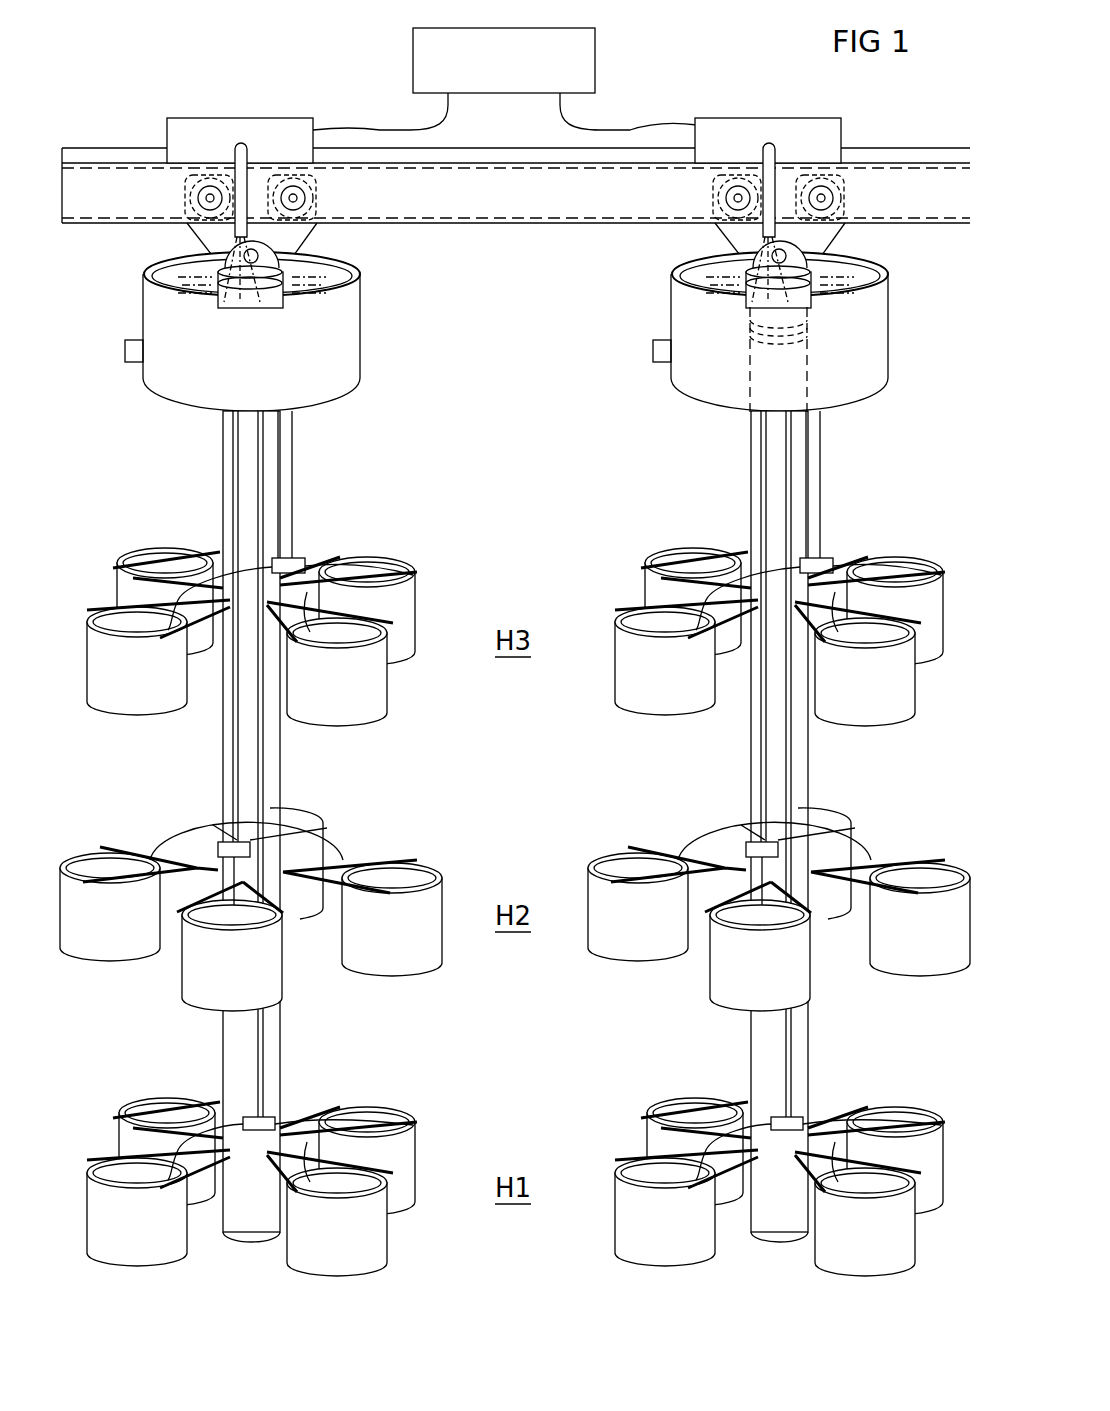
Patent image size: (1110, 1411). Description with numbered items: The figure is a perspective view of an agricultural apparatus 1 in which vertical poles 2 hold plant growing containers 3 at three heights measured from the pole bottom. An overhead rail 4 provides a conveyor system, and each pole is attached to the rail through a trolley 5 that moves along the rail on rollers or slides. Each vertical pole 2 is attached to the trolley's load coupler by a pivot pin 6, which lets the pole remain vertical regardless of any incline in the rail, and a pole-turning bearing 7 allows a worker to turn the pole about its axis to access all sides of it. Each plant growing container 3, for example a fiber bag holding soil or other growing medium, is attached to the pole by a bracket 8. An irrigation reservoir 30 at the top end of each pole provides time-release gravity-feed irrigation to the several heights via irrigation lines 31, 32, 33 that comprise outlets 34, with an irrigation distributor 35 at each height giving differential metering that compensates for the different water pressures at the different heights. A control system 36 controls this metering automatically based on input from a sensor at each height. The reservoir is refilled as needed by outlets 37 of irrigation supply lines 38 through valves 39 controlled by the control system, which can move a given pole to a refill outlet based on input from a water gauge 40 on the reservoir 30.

The agricultural apparatus 1 is at (343, 70).
The vertical pole 2 is at (223, 503).
The plant growing container 3 is at (123, 692).
The overhead rail 4 is at (527, 210).
The trolley 5 is at (185, 206).
The pivot pin 6 is at (283, 244).
The pole-turning bearing 7 is at (807, 327).
The bracket 8 is at (207, 866).
The irrigation reservoir 30 is at (236, 374).
The irrigation line 31 is at (292, 445).
The irrigation line 32 is at (263, 494).
The irrigation line 33 is at (233, 460).
The outlet 34 is at (185, 604).
The irrigation distributor 35 is at (300, 558).
The control system 36 is at (489, 77).
The outlet of irrigation supply line 37 is at (222, 233).
The irrigation supply line 38 is at (527, 148).
The valve 39 is at (282, 128).
The water gauge 40 is at (125, 348).